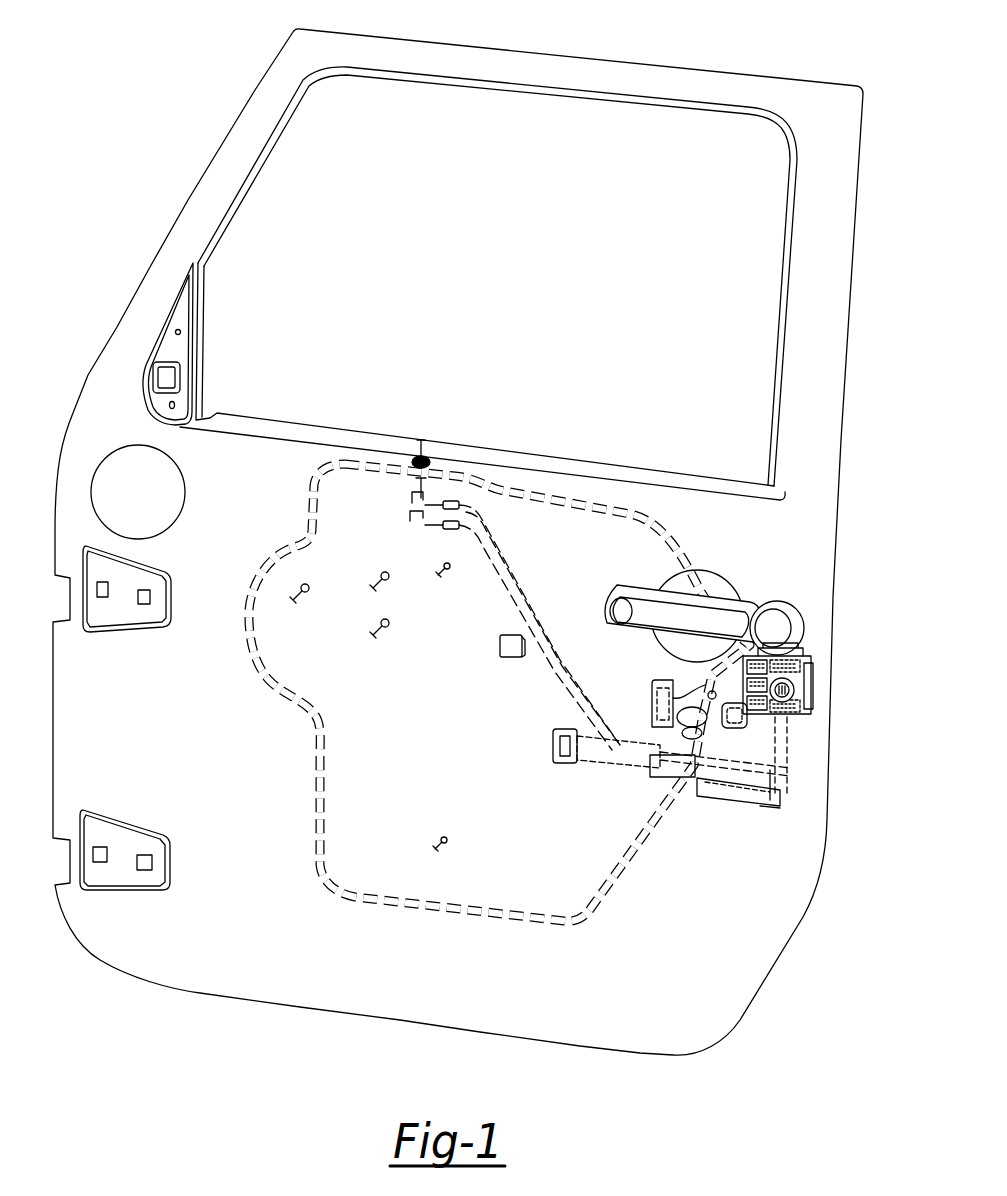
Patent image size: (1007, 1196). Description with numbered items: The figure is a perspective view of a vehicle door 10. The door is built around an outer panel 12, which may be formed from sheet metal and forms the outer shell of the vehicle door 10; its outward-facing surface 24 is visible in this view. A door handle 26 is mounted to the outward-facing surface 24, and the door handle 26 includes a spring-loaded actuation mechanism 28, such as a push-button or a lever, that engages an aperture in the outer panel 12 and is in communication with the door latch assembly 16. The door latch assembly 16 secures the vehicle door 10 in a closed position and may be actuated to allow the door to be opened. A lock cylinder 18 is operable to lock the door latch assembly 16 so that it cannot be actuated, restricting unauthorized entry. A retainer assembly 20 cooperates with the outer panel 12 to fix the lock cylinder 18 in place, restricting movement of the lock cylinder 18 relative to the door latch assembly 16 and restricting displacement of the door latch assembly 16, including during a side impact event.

The vehicle door 10 is at (172, 148).
The outer panel 12 is at (778, 912).
The door latch assembly 16 is at (815, 733).
The lock cylinder 18 is at (747, 685).
The retainer assembly 20 is at (830, 673).
The outward-facing surface 24 is at (718, 904).
The door handle 26 is at (708, 592).
The spring-loaded actuation mechanism 28 is at (773, 632).